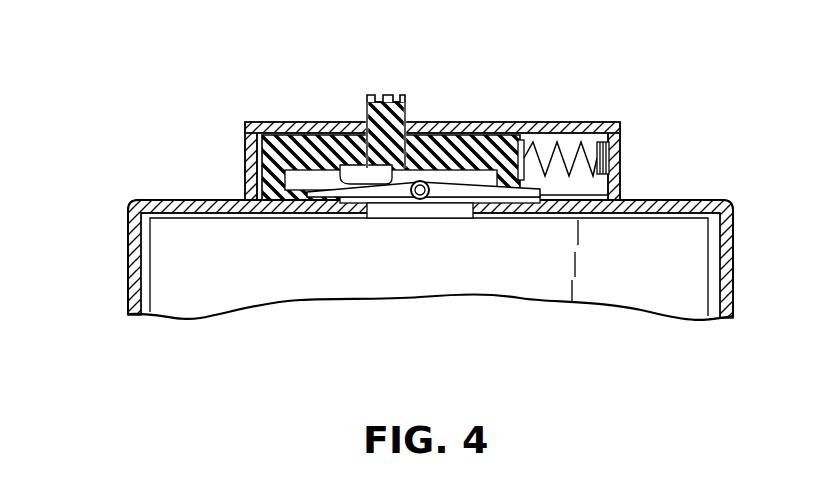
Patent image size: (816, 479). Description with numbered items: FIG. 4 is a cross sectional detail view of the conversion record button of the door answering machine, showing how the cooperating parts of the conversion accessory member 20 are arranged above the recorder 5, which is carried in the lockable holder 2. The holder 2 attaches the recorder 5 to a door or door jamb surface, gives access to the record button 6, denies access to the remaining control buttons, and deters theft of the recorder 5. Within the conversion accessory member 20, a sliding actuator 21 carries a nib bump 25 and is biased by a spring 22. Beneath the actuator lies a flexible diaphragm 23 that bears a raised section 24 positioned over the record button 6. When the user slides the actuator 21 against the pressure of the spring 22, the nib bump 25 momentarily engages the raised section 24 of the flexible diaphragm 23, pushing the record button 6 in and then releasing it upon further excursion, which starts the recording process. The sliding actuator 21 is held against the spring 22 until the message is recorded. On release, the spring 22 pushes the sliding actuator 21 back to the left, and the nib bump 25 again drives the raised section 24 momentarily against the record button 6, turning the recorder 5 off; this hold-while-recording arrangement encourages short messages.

The lockable holder 2 is at (128, 268).
The recorder 5 is at (647, 282).
The record button 6 is at (390, 207).
The conversion accessory member 20 is at (622, 140).
The sliding actuator 21 is at (388, 95).
The spring 22 is at (553, 140).
The flexible diaphragm 23 is at (463, 203).
The raised section 24 is at (423, 180).
The nib bump 25 is at (352, 165).